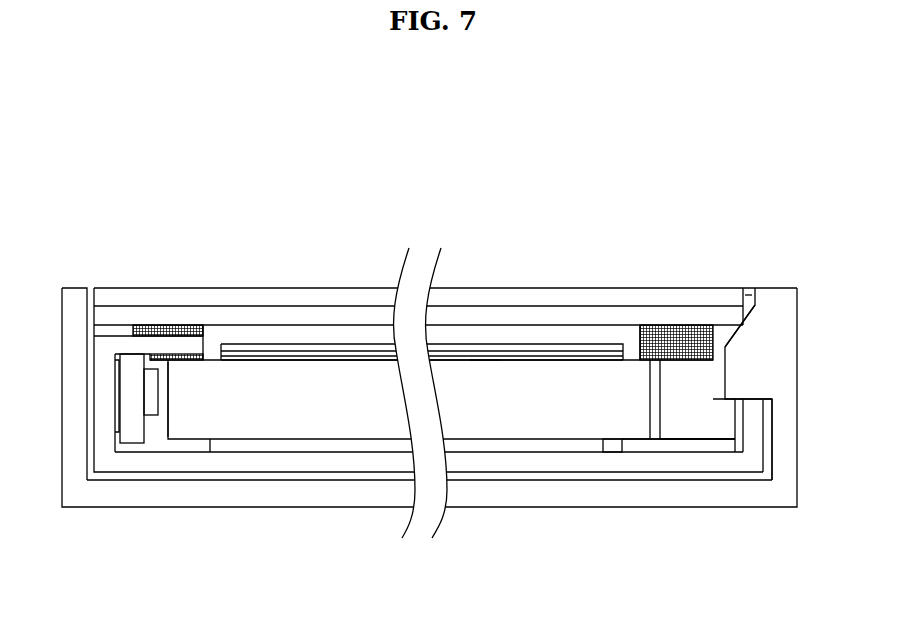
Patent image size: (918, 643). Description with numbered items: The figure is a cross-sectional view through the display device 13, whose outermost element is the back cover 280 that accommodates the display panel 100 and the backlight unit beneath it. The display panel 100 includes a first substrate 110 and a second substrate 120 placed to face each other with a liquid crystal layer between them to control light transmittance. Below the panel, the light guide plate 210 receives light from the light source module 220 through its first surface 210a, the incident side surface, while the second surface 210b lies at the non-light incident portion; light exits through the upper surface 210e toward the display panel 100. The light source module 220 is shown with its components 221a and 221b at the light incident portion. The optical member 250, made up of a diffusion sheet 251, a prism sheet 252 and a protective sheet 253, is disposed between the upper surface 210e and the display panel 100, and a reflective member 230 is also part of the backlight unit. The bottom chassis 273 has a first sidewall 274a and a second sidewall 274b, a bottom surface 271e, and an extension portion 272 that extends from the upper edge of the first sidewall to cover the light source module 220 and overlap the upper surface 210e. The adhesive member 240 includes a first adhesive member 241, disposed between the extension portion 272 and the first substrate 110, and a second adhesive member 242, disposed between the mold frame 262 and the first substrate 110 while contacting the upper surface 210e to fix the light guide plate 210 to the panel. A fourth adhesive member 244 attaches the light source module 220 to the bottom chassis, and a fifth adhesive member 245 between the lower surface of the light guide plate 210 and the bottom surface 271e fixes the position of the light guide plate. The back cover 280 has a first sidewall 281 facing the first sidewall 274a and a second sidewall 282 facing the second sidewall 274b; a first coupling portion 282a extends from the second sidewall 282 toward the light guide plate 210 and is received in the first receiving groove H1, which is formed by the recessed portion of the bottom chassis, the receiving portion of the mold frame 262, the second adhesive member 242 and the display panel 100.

The display device 13 is at (131, 177).
The display panel 100 is at (424, 265).
The first substrate 110 is at (721, 328).
The second substrate 120 is at (681, 296).
The first receiving groove H1 is at (749, 300).
The light guide plate 210 is at (446, 454).
The first surface 210a is at (169, 390).
The second surface 210b is at (655, 382).
The upper surface 210e is at (483, 363).
The light source module 220 is at (157, 468).
The driving chip 221a is at (153, 414).
The flexible circuit board 221b is at (130, 438).
The reflective member 230 is at (312, 444).
The adhesive member 240 is at (423, 220).
The first adhesive member 241 is at (202, 325).
The second adhesive member 242 is at (668, 332).
The fourth adhesive member 244 is at (117, 418).
The fifth adhesive member 245 is at (682, 448).
The optical member 250 is at (422, 267).
The diffusion sheet 251 is at (472, 345).
The prism sheet 252 is at (510, 352).
The protective sheet 253 is at (537, 357).
The mold frame 262 is at (726, 432).
The bottom surface 271e is at (607, 451).
The extension portion 272 is at (128, 343).
The bottom chassis 273 is at (748, 468).
The first sidewall 274a is at (93, 421).
The second sidewall 274b is at (765, 425).
The back cover 280 is at (538, 497).
The first sidewall 281 is at (62, 395).
The second sidewall 282 is at (798, 384).
The first coupling portion 282a is at (738, 334).